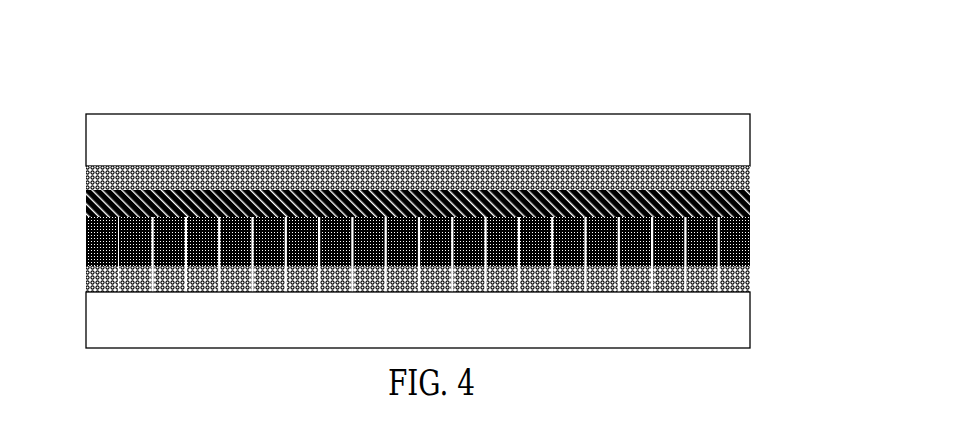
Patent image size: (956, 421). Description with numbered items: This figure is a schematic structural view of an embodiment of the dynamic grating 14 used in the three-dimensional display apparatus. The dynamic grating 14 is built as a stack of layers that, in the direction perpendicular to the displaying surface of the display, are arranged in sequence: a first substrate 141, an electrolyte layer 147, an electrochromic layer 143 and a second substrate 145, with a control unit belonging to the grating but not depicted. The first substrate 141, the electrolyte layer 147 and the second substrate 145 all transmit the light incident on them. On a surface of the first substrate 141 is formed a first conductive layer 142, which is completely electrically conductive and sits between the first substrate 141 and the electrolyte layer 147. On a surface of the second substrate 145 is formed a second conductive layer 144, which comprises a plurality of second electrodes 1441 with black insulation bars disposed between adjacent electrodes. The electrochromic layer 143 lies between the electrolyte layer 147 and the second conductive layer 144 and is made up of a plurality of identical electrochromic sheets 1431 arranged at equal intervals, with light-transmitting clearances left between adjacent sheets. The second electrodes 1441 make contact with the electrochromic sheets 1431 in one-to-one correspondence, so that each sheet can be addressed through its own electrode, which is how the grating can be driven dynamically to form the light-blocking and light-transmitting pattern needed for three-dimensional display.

The dynamic grating 14 is at (434, 195).
The first substrate 141 is at (751, 138).
The first conductive layer 142 is at (751, 182).
The electrolyte layer 147 is at (751, 210).
The electrochromic layer 143 is at (751, 252).
The electrochromic sheet 1431 is at (84, 235).
The second conductive layer 144 is at (758, 284).
The second electrode 1441 is at (84, 281).
The second substrate 145 is at (751, 340).